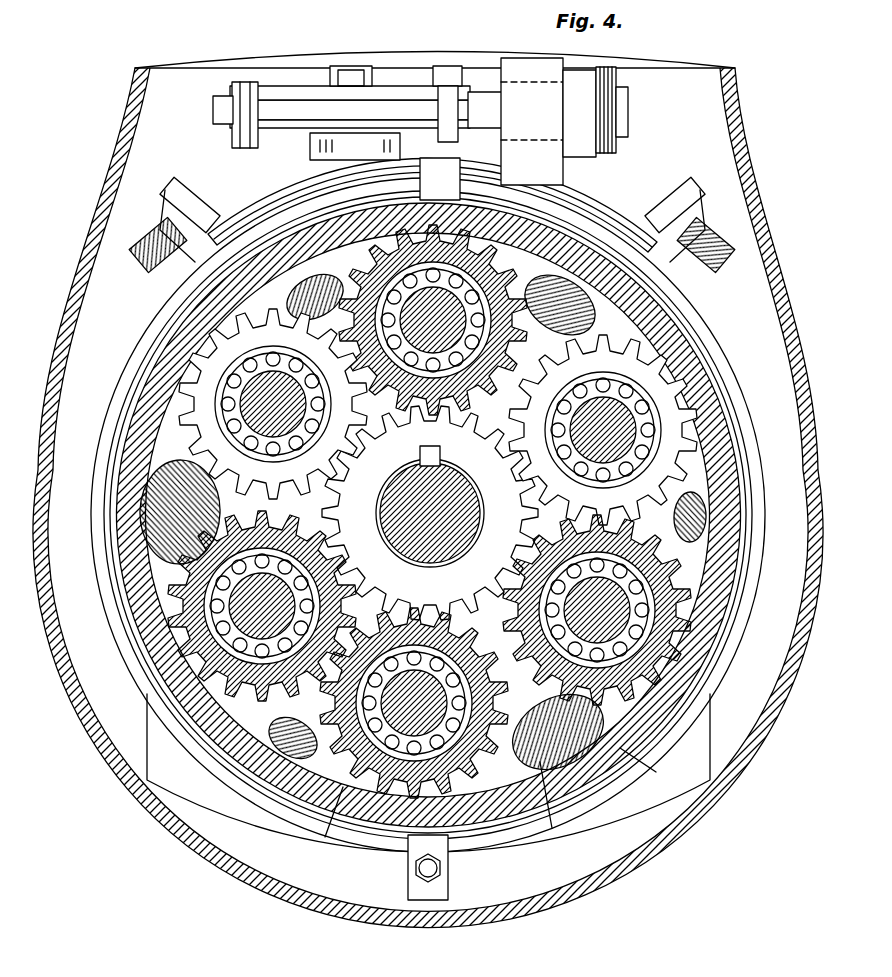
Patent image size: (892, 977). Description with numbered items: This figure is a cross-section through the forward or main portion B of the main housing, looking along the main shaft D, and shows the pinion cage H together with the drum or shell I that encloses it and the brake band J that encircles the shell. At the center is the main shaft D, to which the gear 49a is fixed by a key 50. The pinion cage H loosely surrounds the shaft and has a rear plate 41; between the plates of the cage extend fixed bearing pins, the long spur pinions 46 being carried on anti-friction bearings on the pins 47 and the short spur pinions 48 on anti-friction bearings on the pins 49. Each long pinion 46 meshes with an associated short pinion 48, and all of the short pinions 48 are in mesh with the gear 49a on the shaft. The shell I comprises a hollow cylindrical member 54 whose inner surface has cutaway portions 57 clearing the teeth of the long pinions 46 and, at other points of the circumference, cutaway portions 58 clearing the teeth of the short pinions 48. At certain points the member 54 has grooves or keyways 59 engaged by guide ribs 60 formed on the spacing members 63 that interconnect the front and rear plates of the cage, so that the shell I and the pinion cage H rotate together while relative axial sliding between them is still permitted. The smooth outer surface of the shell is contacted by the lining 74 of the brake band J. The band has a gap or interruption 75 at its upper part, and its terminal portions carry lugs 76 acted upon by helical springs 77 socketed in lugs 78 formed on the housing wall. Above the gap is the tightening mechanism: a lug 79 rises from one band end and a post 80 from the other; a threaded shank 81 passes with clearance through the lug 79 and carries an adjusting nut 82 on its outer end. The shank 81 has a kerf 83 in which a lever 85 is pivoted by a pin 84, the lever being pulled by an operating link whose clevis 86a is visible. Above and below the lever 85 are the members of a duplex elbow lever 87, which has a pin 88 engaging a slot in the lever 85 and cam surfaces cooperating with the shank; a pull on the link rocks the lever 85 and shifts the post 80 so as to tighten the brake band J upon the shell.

The forward or main portion B is at (135, 118).
The pinion cage drum or shell I is at (722, 400).
The brake band J is at (752, 432).
The hollow cylindrical member 54 is at (736, 480).
The rear plate 41 is at (692, 558).
The long spur pinions 46 is at (368, 265).
The pins 47 is at (690, 656).
The short spur pinions 48 is at (556, 808).
The pins 49 is at (407, 742).
The gear 49a is at (430, 513).
The key 50 is at (433, 455).
The main shaft D is at (452, 478).
The cutaway portions 57 is at (652, 698).
The cutaway portions 58 is at (325, 824).
The grooves or keyways 59 is at (143, 487).
The guide ribs 60 is at (143, 520).
The spacing members 63 is at (173, 480).
The lining 74 is at (195, 748).
The gap or interruption 75 is at (478, 186).
The lugs 76 is at (190, 196).
The helical springs 77 is at (172, 214).
The lugs 78 is at (146, 218).
The lug 79 is at (516, 70).
The post 80 is at (312, 168).
The threaded shank 81 is at (626, 110).
The adjusting nut 82 is at (628, 134).
The kerf 83 is at (484, 92).
The pin 84 is at (447, 66).
The lever 85 is at (390, 108).
The clevis 86a is at (214, 144).
The duplex elbow lever 87 is at (318, 96).
The pin 88 is at (288, 92).
The pinion cage H is at (652, 775).